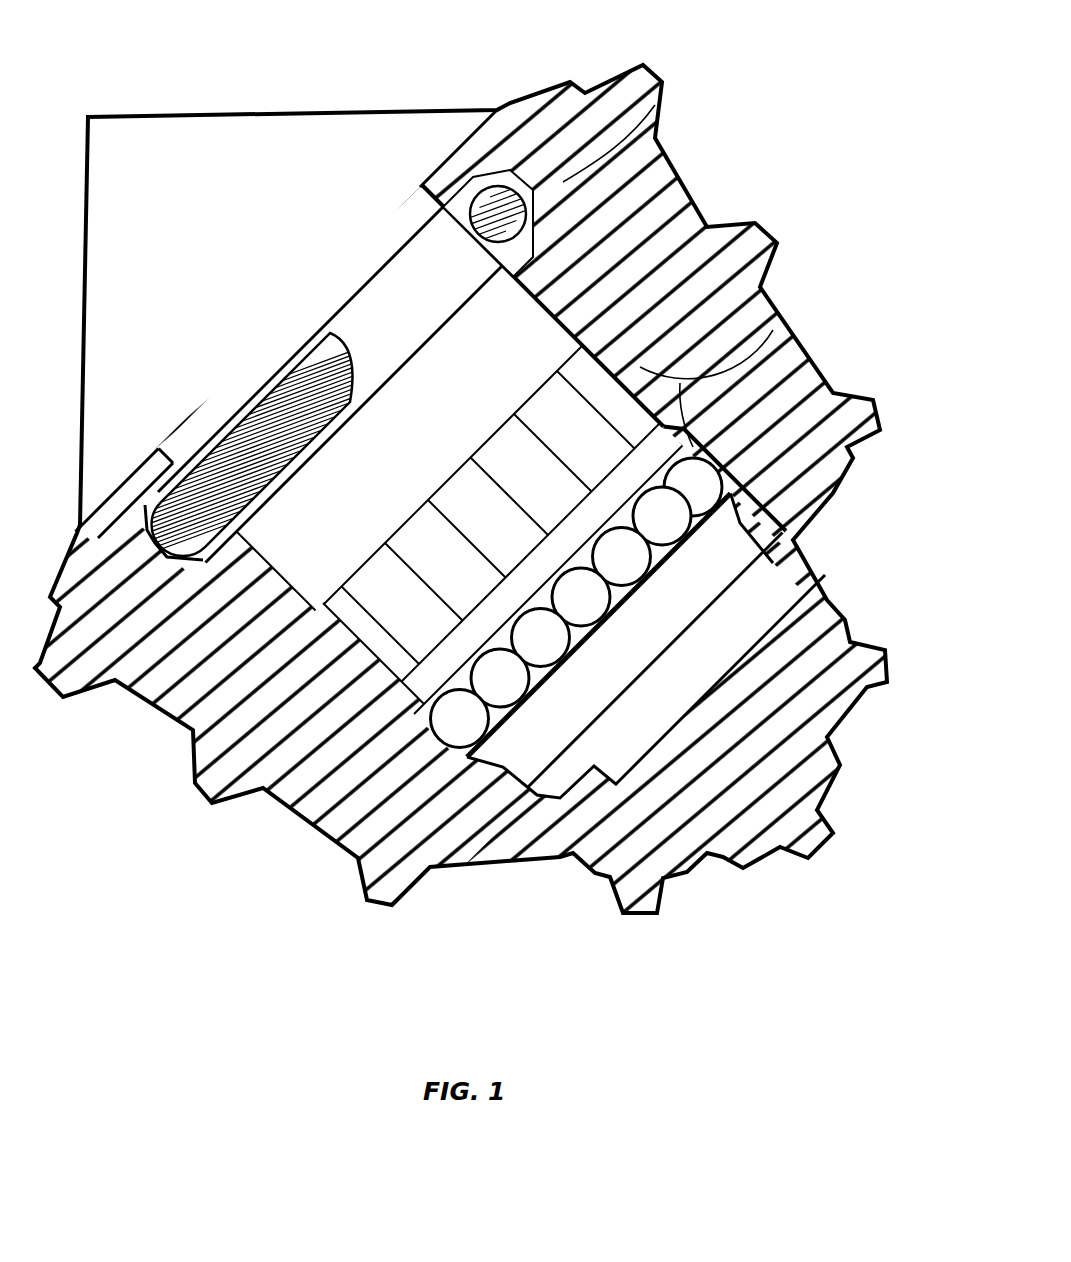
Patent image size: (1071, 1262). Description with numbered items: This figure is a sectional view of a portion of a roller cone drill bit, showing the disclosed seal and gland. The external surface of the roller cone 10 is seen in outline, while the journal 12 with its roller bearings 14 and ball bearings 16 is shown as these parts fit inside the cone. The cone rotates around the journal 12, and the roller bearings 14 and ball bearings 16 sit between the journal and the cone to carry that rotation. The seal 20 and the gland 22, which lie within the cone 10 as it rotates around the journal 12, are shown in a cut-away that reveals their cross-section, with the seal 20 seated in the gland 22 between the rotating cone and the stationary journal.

The roller cone 10 is at (535, 631).
The journal 12 is at (677, 380).
The roller bearings 14 is at (360, 622).
The ball bearings 16 is at (410, 622).
The seal 20 is at (468, 212).
The gland 22 is at (592, 178).